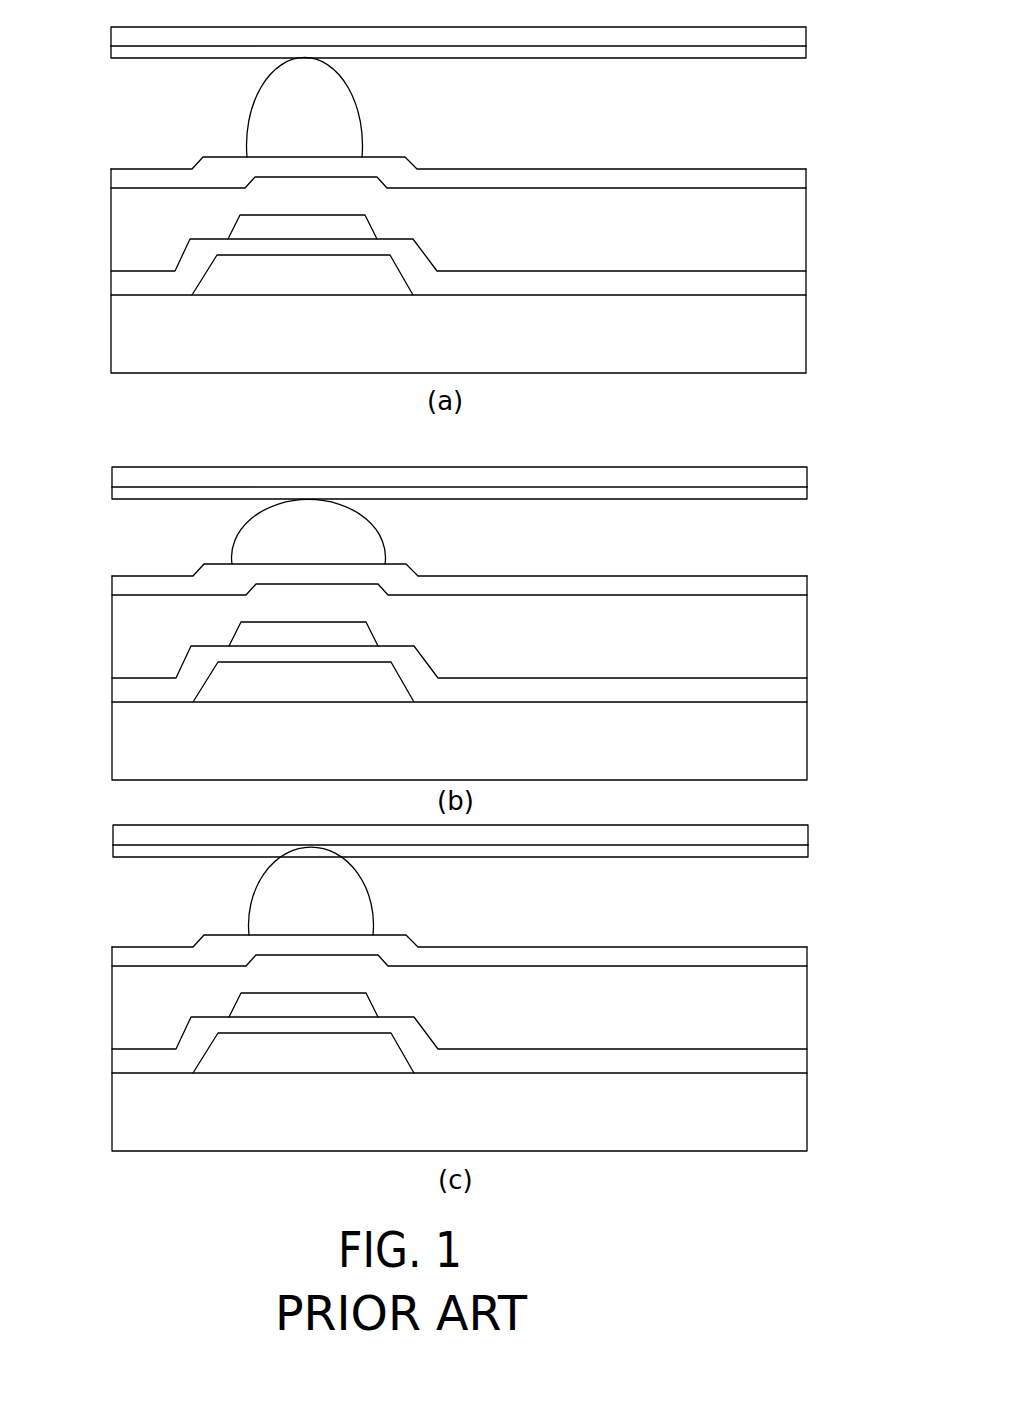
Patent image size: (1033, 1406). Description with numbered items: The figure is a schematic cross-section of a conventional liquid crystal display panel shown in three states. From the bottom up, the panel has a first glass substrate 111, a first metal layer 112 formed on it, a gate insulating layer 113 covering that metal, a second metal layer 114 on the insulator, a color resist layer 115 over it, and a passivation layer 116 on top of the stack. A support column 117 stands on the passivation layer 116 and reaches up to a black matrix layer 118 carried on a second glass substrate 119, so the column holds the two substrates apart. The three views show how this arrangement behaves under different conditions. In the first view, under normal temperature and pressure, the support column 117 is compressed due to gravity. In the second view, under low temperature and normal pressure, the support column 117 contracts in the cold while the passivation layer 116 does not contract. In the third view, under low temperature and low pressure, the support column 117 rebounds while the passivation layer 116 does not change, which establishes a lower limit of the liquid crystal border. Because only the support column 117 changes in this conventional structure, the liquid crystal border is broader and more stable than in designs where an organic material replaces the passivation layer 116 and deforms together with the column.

The first glass substrate 111 is at (780, 334).
The first metal layer 112 is at (225, 278).
The gate insulating layer 113 is at (790, 279).
The second metal layer 114 is at (249, 231).
The color resist layer 115 is at (780, 232).
The passivation layer 116 is at (780, 180).
The support column 117 is at (265, 105).
The black matrix layer 118 is at (788, 48).
The second glass substrate 119 is at (788, 39).